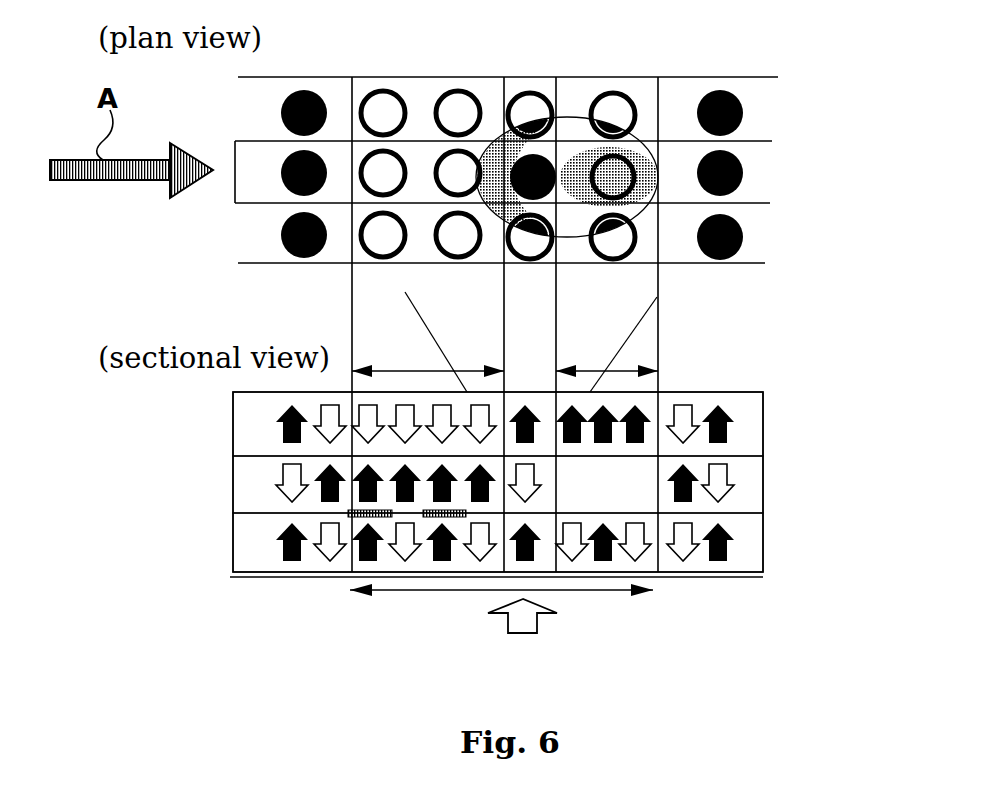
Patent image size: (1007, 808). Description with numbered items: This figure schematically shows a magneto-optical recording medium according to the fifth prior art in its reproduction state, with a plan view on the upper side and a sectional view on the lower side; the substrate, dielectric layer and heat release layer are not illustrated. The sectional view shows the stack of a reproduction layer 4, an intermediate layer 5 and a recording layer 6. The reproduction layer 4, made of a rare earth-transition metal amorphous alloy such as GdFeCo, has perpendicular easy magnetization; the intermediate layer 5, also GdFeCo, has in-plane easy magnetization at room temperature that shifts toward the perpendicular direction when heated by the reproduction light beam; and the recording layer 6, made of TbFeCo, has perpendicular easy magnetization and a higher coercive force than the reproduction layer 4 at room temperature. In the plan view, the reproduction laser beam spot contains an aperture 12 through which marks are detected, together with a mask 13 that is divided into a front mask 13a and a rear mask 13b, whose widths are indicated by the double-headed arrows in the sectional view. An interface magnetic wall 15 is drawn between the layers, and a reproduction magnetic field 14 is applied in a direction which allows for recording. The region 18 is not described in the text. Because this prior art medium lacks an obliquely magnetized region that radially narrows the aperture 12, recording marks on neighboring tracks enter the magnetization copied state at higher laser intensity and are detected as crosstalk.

The reproduction layer 4 is at (245, 427).
The intermediate layer 5 is at (245, 486).
The recording layer 6 is at (245, 545).
The aperture 12 is at (550, 152).
The mask 13 is at (517, 127).
The front mask 13a is at (397, 371).
The rear mask 13b is at (620, 371).
The reproduction magnetic field 14 is at (537, 623).
The interface magnetic wall 15 is at (438, 520).
The magnetization transfer region 18 is at (640, 322).